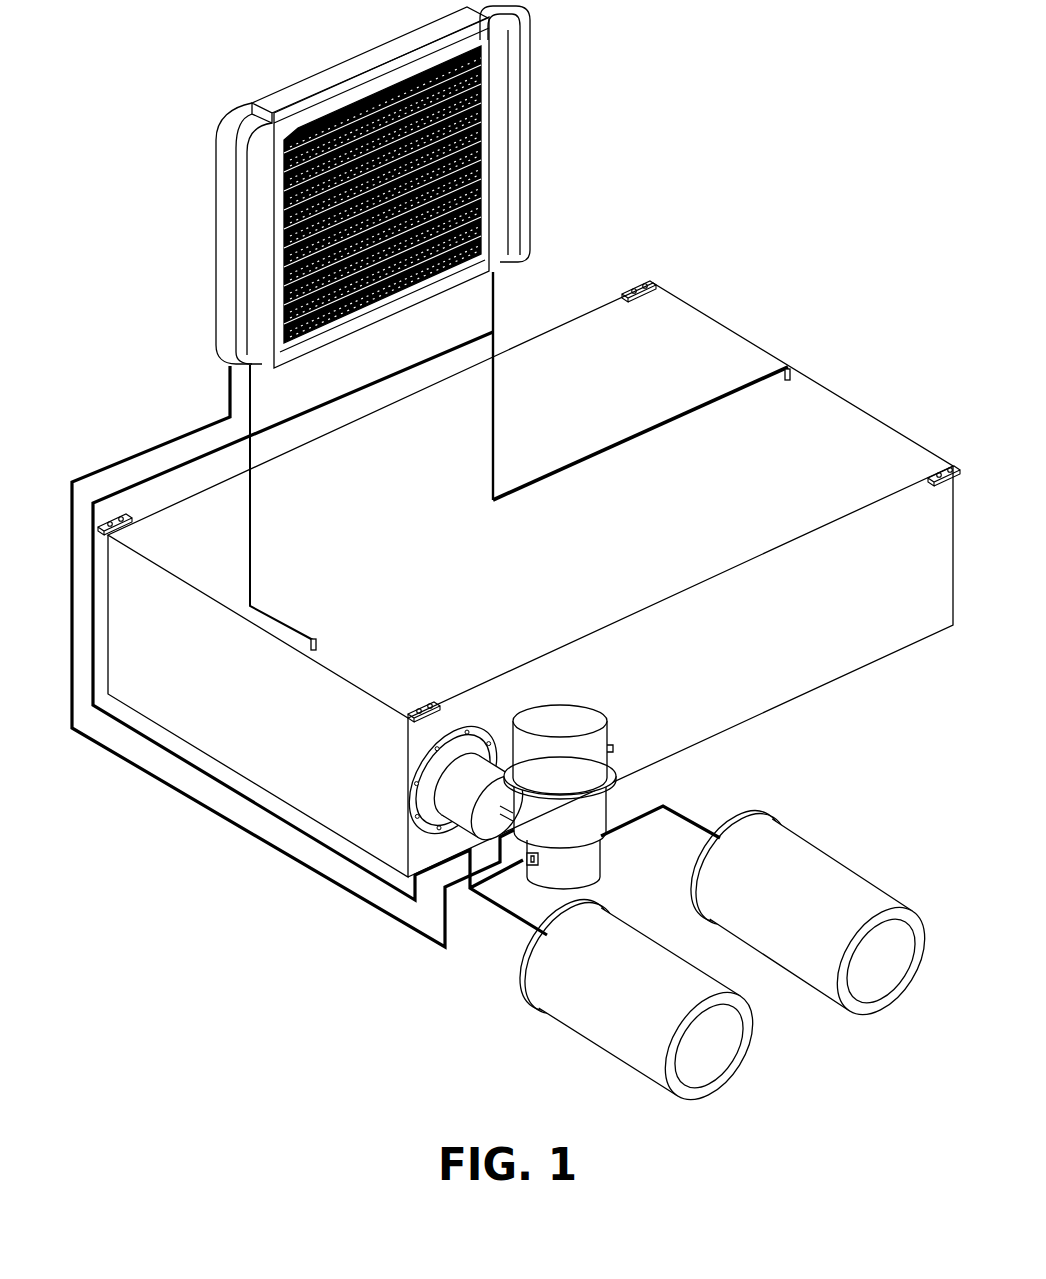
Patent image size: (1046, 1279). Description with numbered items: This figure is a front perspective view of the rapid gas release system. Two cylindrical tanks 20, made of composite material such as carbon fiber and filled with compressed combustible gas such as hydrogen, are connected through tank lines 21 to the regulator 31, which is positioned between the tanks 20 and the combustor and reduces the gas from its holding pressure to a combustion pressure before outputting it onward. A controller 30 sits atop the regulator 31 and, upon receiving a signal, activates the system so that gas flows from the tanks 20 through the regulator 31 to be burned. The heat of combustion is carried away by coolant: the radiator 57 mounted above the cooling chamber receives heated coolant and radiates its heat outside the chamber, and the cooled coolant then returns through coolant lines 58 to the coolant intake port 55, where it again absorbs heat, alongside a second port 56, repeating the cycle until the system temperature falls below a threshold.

The tank 20 is at (721, 955).
The tank line 21 is at (660, 810).
The controller 30 is at (560, 752).
The regulator 31 is at (498, 800).
The coolant intake port 55 is at (328, 632).
The outlet port 56 is at (804, 363).
The radiator 57 is at (373, 187).
The coolant line 58 is at (413, 609).